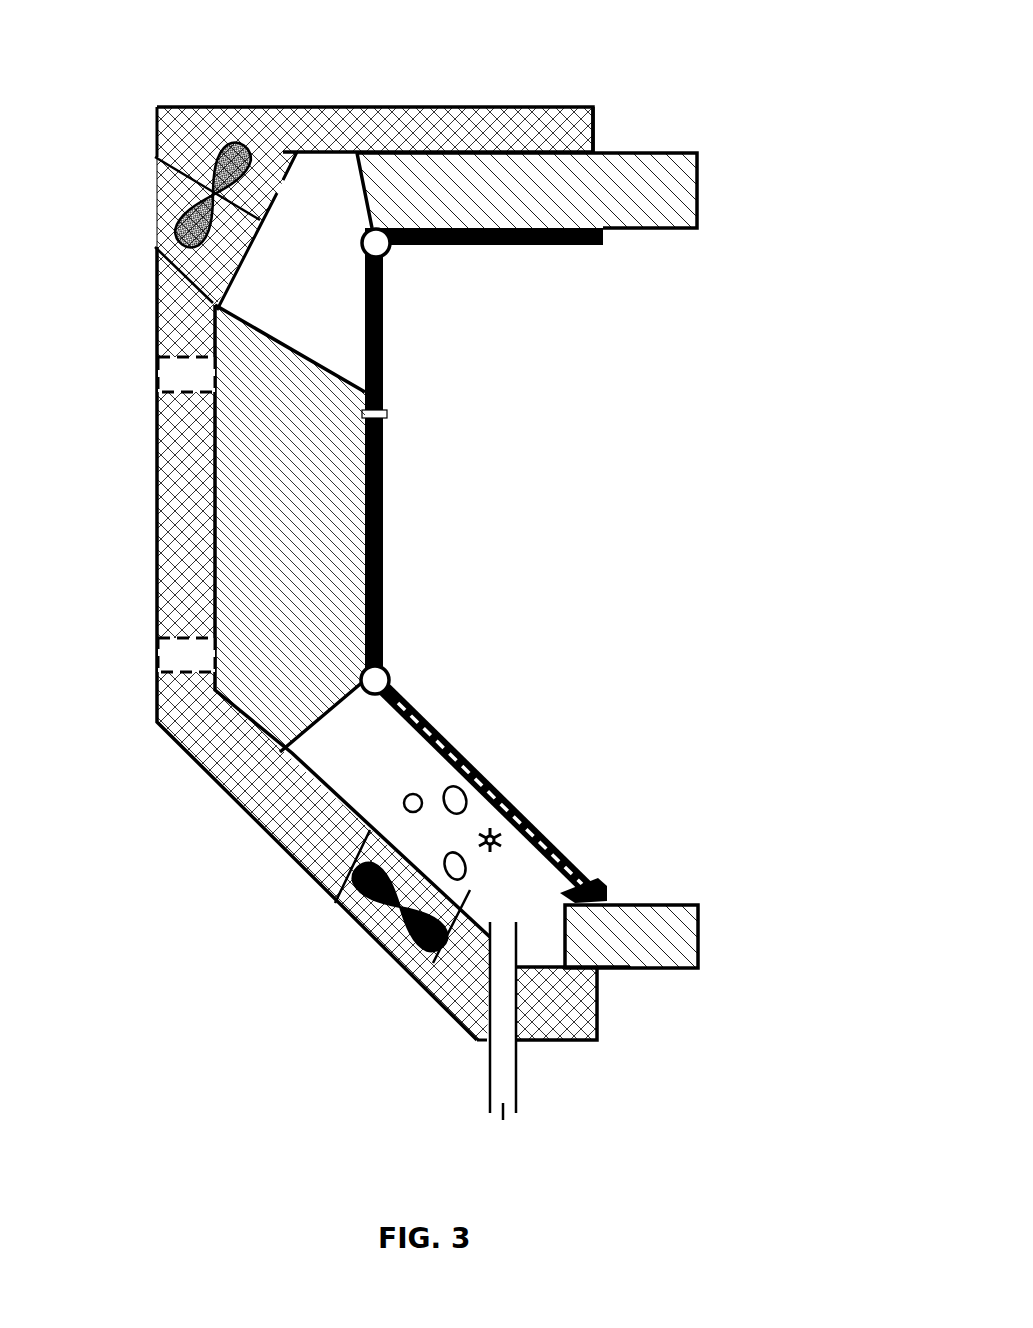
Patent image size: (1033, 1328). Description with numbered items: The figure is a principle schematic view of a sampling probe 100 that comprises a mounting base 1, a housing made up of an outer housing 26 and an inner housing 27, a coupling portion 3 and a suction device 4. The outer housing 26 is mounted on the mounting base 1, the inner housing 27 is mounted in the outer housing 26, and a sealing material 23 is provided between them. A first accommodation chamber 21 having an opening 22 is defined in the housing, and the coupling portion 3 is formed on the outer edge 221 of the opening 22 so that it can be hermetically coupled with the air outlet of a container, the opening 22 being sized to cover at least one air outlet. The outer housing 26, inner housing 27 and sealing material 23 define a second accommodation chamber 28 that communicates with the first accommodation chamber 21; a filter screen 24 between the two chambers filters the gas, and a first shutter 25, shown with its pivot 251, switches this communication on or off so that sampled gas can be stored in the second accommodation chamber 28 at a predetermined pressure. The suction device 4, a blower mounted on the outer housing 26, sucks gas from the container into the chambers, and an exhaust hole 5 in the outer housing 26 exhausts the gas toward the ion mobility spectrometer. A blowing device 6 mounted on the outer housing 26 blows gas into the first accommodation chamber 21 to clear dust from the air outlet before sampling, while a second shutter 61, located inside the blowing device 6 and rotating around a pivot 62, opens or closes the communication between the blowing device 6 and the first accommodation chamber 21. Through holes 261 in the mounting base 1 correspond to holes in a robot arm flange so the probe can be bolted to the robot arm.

The sampling probe 100 is at (381, 35).
The mounting base 1 is at (187, 442).
The coupling portion 3 is at (634, 180).
The suction device 4 is at (335, 903).
The exhaust hole 5 is at (510, 1068).
The blowing device 6 is at (217, 190).
The first accommodation chamber 21 is at (457, 409).
The opening 22 is at (568, 470).
The sealing material 23 is at (330, 600).
The filter screen 24 is at (440, 757).
The first shutter 25 is at (453, 737).
The outer housing 26 is at (538, 138).
The inner housing 27 is at (355, 488).
The second accommodation chamber 28 is at (513, 890).
The second shutter 61 is at (365, 292).
The pivot 62 is at (373, 237).
The outer edge 221 is at (593, 127).
The pivot 251 is at (373, 683).
The through holes 261 is at (175, 648).